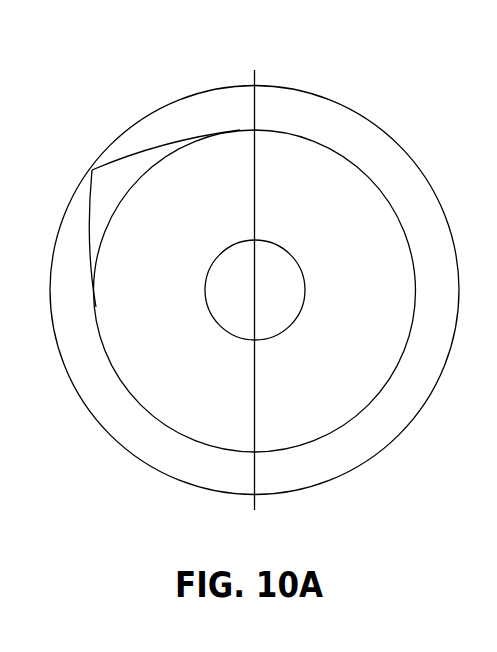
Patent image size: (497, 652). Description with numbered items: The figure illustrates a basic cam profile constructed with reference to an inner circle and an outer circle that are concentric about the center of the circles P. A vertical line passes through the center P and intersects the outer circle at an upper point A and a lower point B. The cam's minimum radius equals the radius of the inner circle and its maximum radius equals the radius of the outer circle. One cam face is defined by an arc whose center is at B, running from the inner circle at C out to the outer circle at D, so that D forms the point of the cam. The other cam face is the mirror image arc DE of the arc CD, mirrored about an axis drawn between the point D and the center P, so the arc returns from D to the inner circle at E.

The intersection point of vertical line with outer circle A is at (240, 175).
The intersection point of vertical line with outer circle B is at (240, 415).
The point on inner circle C is at (255, 277).
The point on outer circle D is at (254, 290).
The point on inner circle E is at (106, 253).
The center of the circles P is at (255, 290).